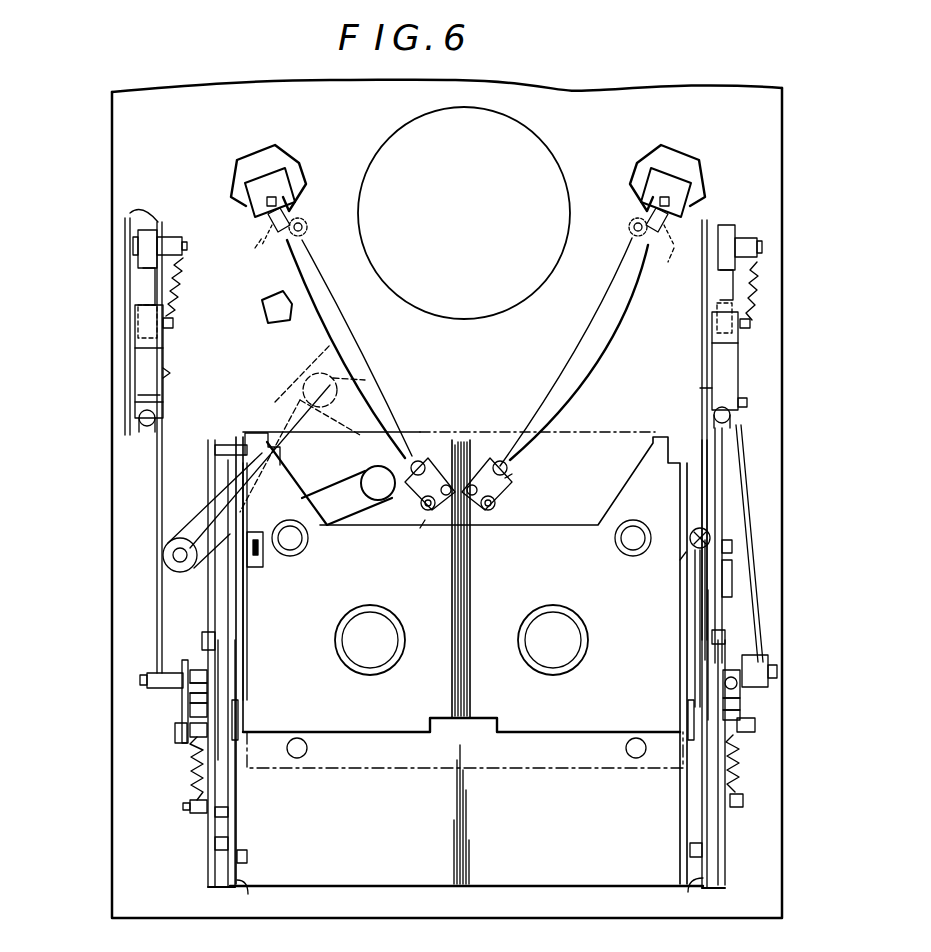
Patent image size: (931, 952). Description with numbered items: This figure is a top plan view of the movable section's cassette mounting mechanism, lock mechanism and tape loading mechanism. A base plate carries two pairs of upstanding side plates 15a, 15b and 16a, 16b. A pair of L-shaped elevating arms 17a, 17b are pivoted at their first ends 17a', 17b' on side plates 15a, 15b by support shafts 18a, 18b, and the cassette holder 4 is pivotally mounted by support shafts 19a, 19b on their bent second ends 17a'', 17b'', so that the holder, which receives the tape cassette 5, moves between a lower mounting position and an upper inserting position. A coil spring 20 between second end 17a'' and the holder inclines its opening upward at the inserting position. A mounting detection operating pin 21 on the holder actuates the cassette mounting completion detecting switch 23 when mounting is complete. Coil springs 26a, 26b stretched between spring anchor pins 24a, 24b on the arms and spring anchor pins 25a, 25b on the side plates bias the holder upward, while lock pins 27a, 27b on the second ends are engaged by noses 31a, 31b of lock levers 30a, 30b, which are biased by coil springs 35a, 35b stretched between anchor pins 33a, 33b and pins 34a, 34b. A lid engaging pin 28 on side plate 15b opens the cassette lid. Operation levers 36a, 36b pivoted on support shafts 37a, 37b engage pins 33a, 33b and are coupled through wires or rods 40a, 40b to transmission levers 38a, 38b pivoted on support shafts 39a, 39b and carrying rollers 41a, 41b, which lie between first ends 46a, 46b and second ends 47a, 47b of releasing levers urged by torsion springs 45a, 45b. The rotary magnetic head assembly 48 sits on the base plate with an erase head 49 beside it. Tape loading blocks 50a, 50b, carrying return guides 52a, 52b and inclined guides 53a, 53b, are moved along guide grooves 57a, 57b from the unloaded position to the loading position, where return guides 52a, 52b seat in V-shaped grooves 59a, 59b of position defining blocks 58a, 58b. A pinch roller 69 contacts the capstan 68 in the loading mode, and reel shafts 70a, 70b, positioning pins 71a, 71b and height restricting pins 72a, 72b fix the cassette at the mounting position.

The cassette holder 4 is at (400, 770).
The tape cassette 5 is at (582, 770).
The side plate 15a is at (720, 858).
The side plate 15b is at (208, 858).
The side plate 16a is at (705, 388).
The side plate 16b is at (126, 395).
The elevating arm 17a is at (678, 664).
The elevating arm 17b is at (258, 663).
The first end of elevating arm 17a' is at (685, 894).
The first end of elevating arm 17b' is at (265, 897).
The second end of elevating arm 17a'' is at (657, 571).
The second end of elevating arm 17b'' is at (278, 561).
The support shaft 18a is at (692, 850).
The support shaft 18b is at (247, 856).
The support shaft 19a is at (695, 603).
The support shaft 19b is at (249, 606).
The coil spring 20 is at (690, 530).
The mounting detection operating pin 21 is at (733, 546).
The cassette mounting completion detecting switch 23 is at (733, 575).
The spring anchor pin 24a is at (743, 800).
The spring anchor pin 24b is at (188, 806).
The spring anchor pin 25a is at (690, 715).
The spring anchor pin 25b is at (238, 718).
The coil spring 26a is at (740, 768).
The coil spring 26b is at (195, 790).
The lock pin 27a is at (728, 636).
The lock pin 27b is at (202, 642).
The lid engaging pin 28 is at (235, 445).
The lock lever 30a is at (705, 690).
The lock lever 30b is at (222, 686).
The lock nail member or nose 31a is at (740, 598).
The lock nail member or nose 31b is at (200, 568).
The anchor pin 33a is at (750, 740).
The anchor pin 33b is at (180, 743).
The pin 34a is at (705, 660).
The pin 34b is at (218, 668).
The coil spring 35a is at (745, 690).
The coil spring 35b is at (190, 698).
The operation lever 36a is at (745, 718).
The operation lever 36b is at (190, 710).
The support shaft 37a is at (772, 655).
The support shaft 37b is at (152, 673).
The transmission lever 38a is at (740, 374).
The transmission lever 38b is at (170, 373).
The support shaft 39a is at (738, 410).
The support shaft 39b is at (166, 410).
The wire or rod 40a is at (725, 490).
The wire or rod 40b is at (157, 490).
The roller 41a is at (713, 360).
The roller 41b is at (135, 360).
The torsion spring 45a is at (720, 222).
The torsion spring 45b is at (130, 213).
The first end of releasing lever 46a is at (718, 298).
The first end of releasing lever 46b is at (148, 300).
The second end of releasing lever 47a is at (715, 335).
The second end of releasing lever 47b is at (173, 332).
The rotary magnetic head assembly 48 is at (497, 325).
The erase head 49 is at (290, 320).
The tape loading block 50a is at (692, 282).
The tape loading block 50b is at (268, 280).
The return guide 52a is at (648, 204).
The return guide 52b is at (288, 205).
The inclined guide 53a is at (628, 230).
The inclined guide 53b is at (306, 233).
The guide groove 57a is at (592, 348).
The guide groove 57b is at (348, 349).
The position defining block 58a is at (710, 190).
The position defining block 58b is at (236, 176).
The groove 59a is at (652, 236).
The groove 59b is at (266, 228).
The capstan 68 is at (303, 386).
The pinch roller 69 is at (365, 386).
The reel shaft 70a is at (563, 676).
The reel shaft 70b is at (385, 676).
The positioning pin 71a is at (618, 552).
The positioning pin 71b is at (308, 552).
The height restricting pin 72a is at (636, 760).
The height restricting pin 72b is at (297, 760).